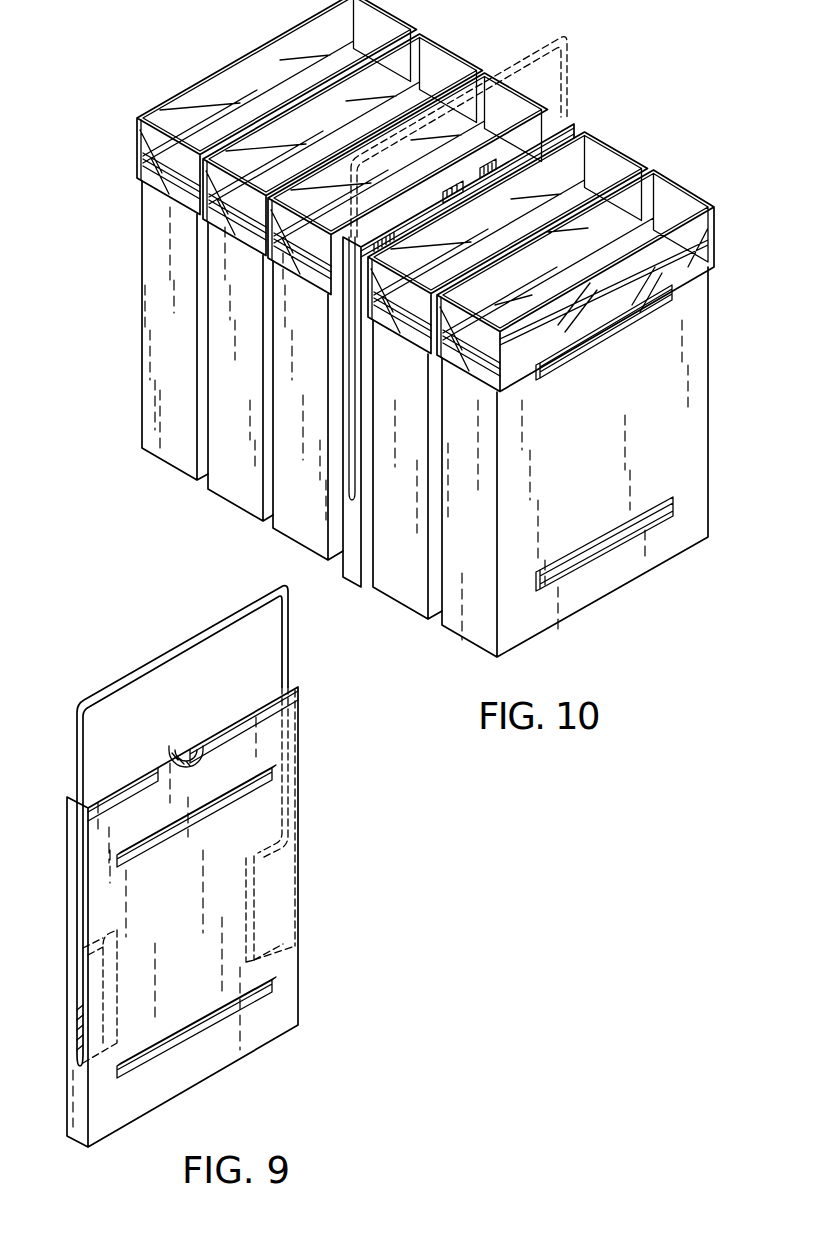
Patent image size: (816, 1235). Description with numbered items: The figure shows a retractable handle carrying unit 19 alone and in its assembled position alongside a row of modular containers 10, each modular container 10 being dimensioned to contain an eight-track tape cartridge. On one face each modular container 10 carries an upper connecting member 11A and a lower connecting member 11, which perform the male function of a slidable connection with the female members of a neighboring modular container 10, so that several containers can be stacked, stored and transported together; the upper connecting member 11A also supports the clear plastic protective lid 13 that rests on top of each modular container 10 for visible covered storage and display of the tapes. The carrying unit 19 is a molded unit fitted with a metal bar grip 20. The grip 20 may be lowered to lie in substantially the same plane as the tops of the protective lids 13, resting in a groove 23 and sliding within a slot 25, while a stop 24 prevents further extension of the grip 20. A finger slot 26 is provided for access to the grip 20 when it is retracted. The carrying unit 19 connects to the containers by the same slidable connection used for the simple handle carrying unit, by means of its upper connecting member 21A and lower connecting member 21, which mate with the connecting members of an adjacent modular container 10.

In FIG. 10, the modular container 10 is at (146, 368).
In FIG. 10, the lower connecting member 11 is at (604, 545).
In FIG. 10, the upper connecting member 11A is at (586, 367).
In FIG. 10, the clear plastic protective lid 13 is at (452, 32).
In FIG. 10, the retractable handle carrying unit 19 is at (350, 575).
In FIG. 9, the retractable handle carrying unit 19 is at (250, 1050).
In FIG. 10, the metal bar grip 20 is at (536, 48).
In FIG. 9, the metal bar grip 20 is at (143, 667).
In FIG. 9, the lower connecting member 21 is at (165, 1064).
In FIG. 9, the upper connecting member 21A is at (148, 860).
In FIG. 9, the groove 23 is at (250, 702).
In FIG. 9, the stop 24 is at (260, 870).
In FIG. 9, the slot 25 is at (284, 907).
In FIG. 10, the finger slot 26 is at (484, 186).
In FIG. 9, the finger slot 26 is at (192, 738).